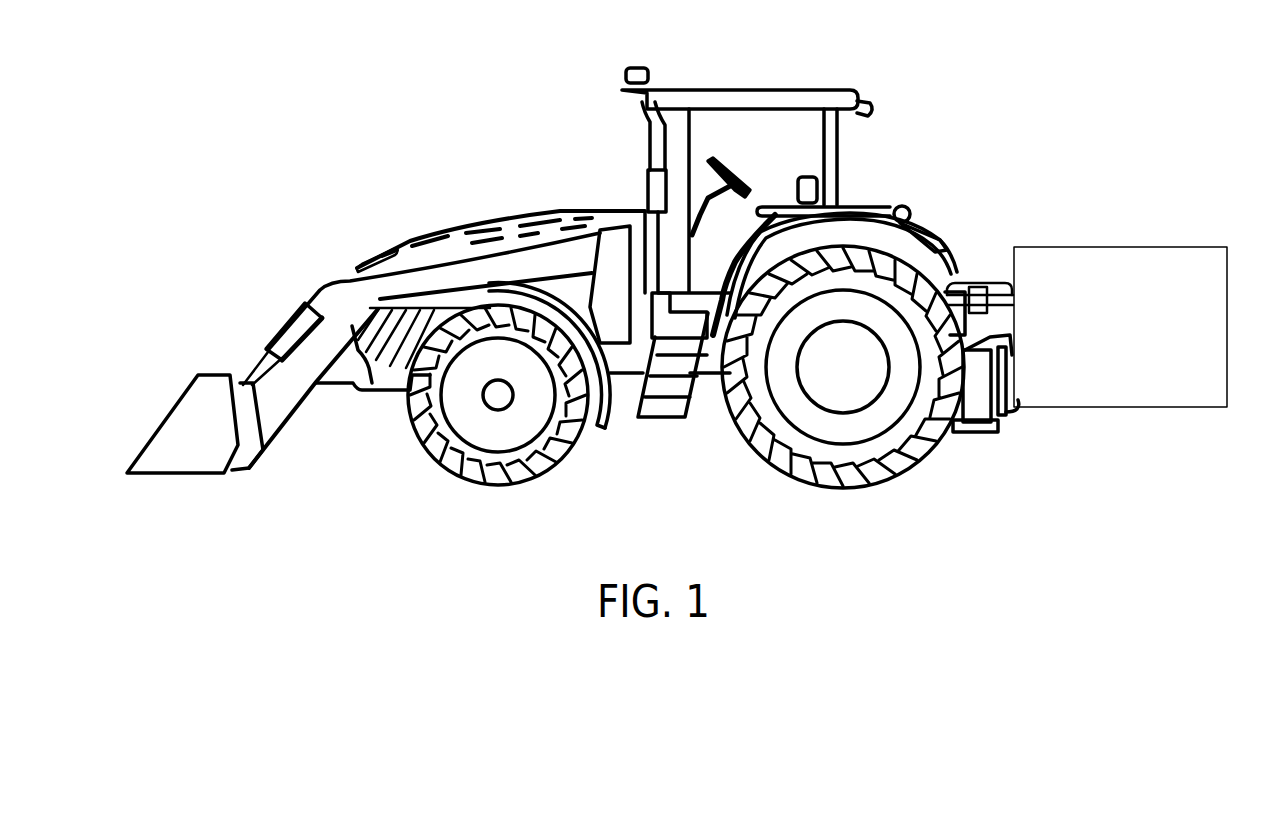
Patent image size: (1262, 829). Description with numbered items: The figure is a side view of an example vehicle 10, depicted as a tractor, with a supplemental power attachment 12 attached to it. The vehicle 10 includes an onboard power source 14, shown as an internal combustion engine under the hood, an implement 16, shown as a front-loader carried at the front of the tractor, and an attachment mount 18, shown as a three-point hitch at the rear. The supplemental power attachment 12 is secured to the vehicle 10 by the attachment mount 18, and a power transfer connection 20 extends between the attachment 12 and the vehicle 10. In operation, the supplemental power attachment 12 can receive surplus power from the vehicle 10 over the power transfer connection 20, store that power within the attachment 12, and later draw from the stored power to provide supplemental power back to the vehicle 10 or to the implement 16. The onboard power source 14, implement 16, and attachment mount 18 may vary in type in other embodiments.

The vehicle 10 is at (416, 65).
The supplemental power attachment 12 is at (1102, 247).
The onboard power source 14 is at (467, 228).
The implement 16 is at (282, 327).
The attachment mount 18 is at (997, 430).
The power transfer connection 20 is at (978, 278).